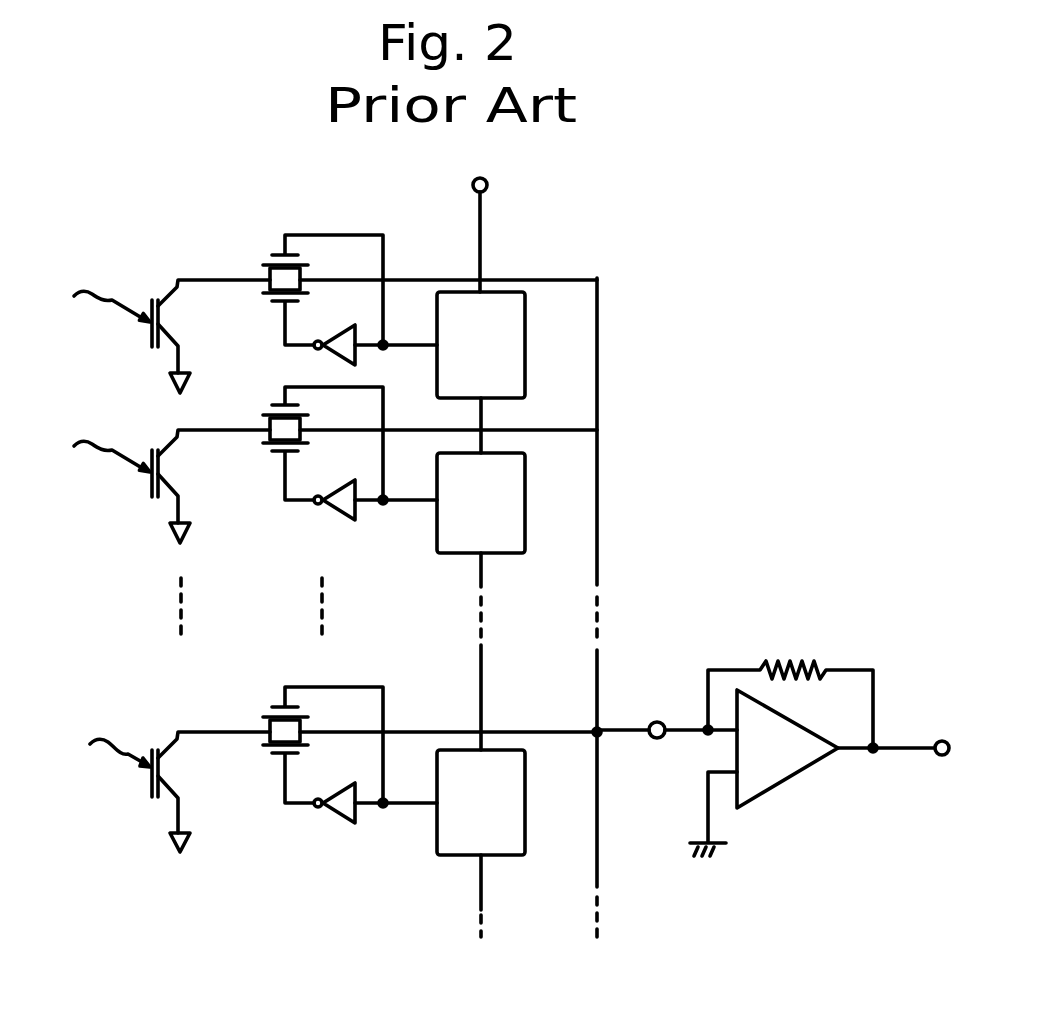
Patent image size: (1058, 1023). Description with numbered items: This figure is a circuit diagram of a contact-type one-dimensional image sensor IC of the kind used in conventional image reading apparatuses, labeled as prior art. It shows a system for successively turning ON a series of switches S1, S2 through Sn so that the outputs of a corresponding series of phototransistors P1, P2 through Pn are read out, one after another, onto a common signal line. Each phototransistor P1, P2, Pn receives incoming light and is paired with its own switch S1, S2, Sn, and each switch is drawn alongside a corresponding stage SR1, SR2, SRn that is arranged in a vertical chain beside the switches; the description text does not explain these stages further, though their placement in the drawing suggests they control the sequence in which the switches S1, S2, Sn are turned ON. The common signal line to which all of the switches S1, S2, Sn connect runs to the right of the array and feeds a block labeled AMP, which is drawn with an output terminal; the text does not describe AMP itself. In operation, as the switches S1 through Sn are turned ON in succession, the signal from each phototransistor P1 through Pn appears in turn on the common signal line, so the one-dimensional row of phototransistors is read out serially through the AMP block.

The phototransistor P1 is at (170, 320).
The phototransistor P2 is at (170, 470).
The phototransistor Pn is at (170, 775).
The switch S1 is at (300, 308).
The switch S2 is at (302, 460).
The switch Sn is at (350, 755).
The shift register stage (first) SR1 is at (481, 345).
The shift register stage (second) SR2 is at (481, 503).
The shift register stage (n-th) SRn is at (481, 802).
The amplifier AMP is at (773, 737).